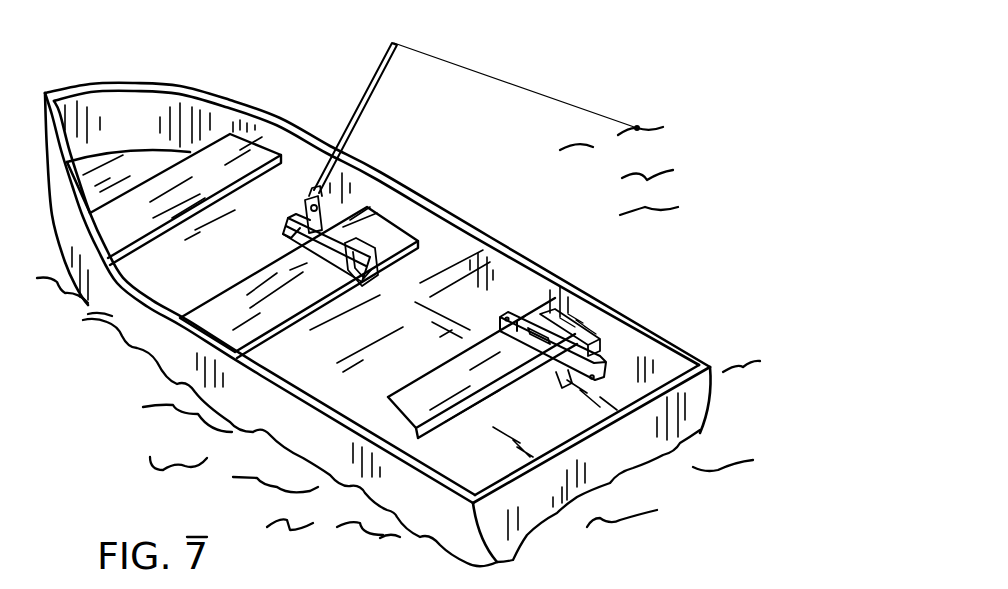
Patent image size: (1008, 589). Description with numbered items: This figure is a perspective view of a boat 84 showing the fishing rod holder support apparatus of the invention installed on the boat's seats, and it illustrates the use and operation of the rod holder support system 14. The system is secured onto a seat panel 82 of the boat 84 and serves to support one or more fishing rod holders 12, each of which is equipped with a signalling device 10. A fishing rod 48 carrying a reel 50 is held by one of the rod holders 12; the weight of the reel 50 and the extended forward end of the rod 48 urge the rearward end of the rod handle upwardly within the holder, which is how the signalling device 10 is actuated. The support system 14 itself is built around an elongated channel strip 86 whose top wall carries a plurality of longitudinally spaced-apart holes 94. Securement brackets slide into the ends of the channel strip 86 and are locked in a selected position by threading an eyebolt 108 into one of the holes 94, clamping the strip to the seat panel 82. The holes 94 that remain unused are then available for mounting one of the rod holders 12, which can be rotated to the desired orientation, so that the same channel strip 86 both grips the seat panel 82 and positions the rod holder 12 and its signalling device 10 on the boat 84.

The signalling device 10 is at (283, 233).
The fishing rod holder 12 is at (377, 244).
The rod holder support system 14 is at (606, 362).
The fishing rod 48 is at (353, 128).
The reel 50 is at (310, 192).
The seat panel 82 is at (370, 232).
The boat 84 is at (353, 185).
The elongated channel strip 86 is at (561, 386).
The holes 94 is at (583, 313).
The eyebolt 108 is at (530, 318).